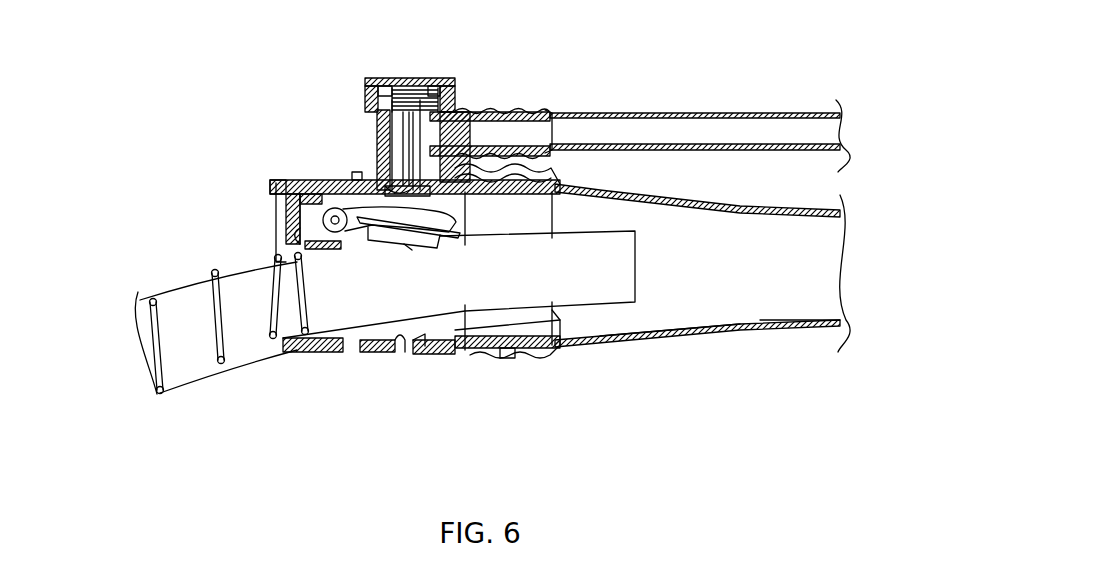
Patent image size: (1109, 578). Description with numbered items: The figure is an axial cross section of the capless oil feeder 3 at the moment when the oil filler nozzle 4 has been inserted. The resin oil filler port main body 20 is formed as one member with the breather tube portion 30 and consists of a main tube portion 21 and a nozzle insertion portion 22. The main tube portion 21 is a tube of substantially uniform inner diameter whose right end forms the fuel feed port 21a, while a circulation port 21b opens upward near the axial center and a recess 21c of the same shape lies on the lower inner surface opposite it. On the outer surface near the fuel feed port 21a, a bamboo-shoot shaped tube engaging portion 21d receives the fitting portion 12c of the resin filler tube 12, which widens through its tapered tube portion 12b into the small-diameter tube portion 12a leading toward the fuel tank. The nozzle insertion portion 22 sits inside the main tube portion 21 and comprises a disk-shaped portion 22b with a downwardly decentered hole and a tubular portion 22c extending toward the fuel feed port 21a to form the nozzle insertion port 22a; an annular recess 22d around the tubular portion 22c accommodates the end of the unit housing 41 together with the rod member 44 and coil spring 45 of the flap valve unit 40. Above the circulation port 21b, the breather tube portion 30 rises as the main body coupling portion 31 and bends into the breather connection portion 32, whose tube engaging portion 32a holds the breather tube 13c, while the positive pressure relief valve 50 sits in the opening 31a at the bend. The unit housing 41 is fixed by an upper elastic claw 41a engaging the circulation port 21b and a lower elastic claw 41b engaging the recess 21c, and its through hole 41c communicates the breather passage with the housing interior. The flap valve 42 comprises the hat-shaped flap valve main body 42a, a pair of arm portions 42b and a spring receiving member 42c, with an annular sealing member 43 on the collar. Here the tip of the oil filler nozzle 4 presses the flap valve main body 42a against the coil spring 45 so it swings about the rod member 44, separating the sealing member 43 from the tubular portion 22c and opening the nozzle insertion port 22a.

The capless oil feeder 3 is at (693, 58).
The oil filler nozzle 4 is at (200, 362).
The filler tube 12 is at (733, 331).
The small-diameter tube portion 12a is at (796, 327).
The tapered tube portion 12b is at (684, 338).
The fitting portion 12c is at (487, 363).
The breather tube 13c is at (725, 114).
The oil filler port main body 20 is at (269, 184).
The main tube portion 21 is at (333, 184).
The fuel feed port 21a is at (557, 322).
The circulation port 21b is at (396, 193).
The recess 21c is at (401, 362).
The tube engaging portion 21d is at (508, 357).
The nozzle insertion portion 22 is at (295, 202).
The nozzle insertion port 22a is at (276, 256).
The disk-shaped portion 22b is at (295, 212).
The tubular portion 22c is at (317, 258).
The annular recess 22d is at (298, 232).
The breather tube portion 30 is at (547, 113).
The main body coupling portion 31 is at (376, 128).
The opening 31a is at (385, 78).
The breather connection portion 32 is at (470, 112).
The tube engaging portion 32a is at (505, 112).
The flap valve unit 40 is at (472, 326).
The unit housing 41 is at (455, 346).
The elastic claw 41a is at (413, 192).
The elastic claw 41b is at (421, 350).
The through hole 41c is at (393, 193).
The flap valve 42 is at (403, 246).
The flap valve main body 42a is at (345, 249).
The arm portions 42b is at (305, 256).
The spring receiving member 42c is at (408, 252).
The sealing member 43 is at (377, 237).
The rod member 44 is at (334, 215).
The coil spring 45 is at (304, 203).
The positive pressure relief valve 50 is at (359, 76).